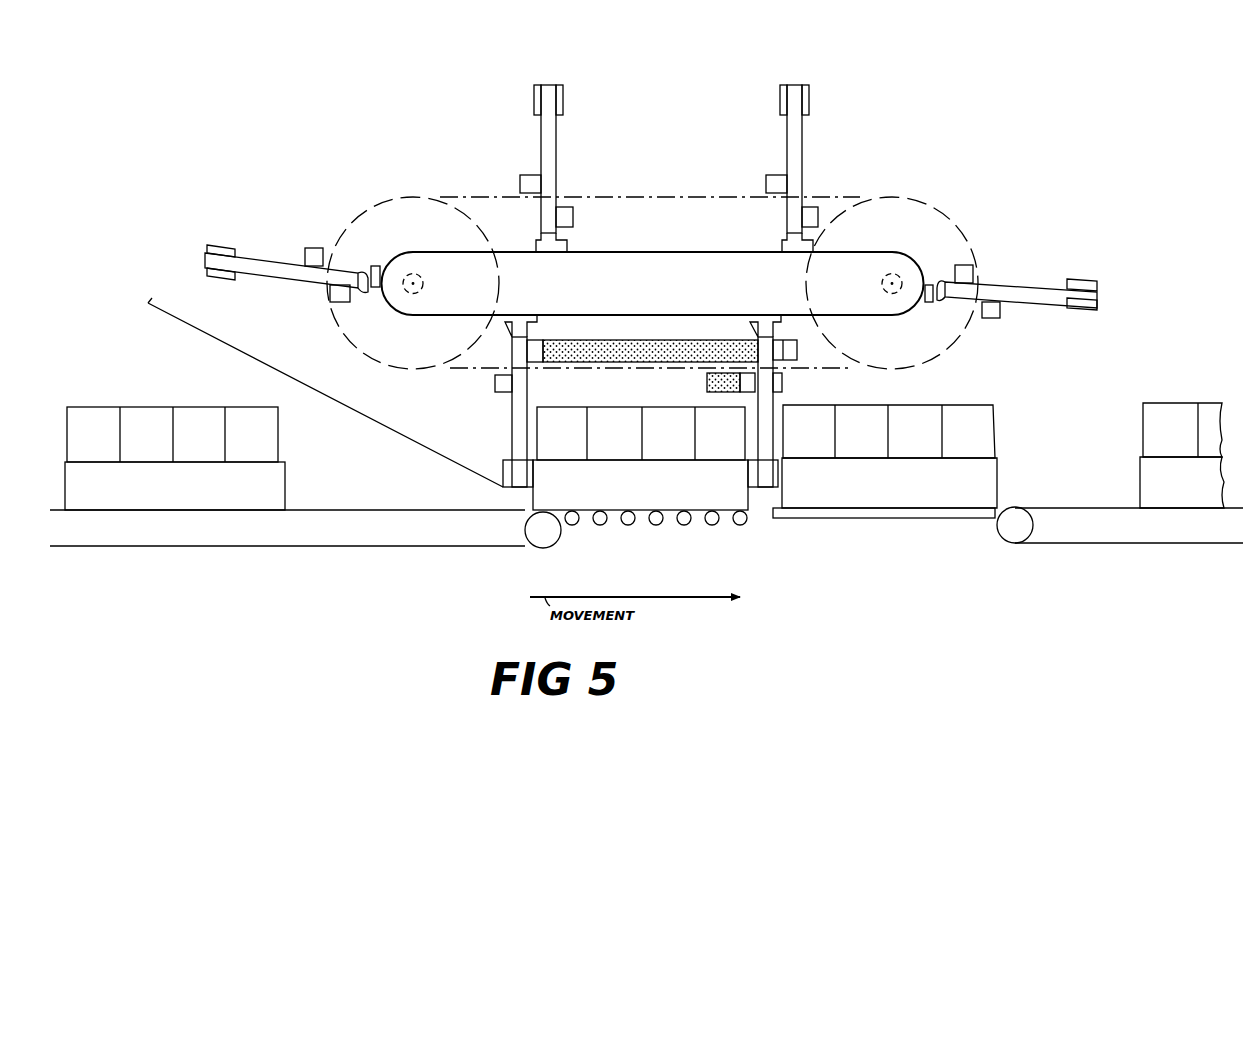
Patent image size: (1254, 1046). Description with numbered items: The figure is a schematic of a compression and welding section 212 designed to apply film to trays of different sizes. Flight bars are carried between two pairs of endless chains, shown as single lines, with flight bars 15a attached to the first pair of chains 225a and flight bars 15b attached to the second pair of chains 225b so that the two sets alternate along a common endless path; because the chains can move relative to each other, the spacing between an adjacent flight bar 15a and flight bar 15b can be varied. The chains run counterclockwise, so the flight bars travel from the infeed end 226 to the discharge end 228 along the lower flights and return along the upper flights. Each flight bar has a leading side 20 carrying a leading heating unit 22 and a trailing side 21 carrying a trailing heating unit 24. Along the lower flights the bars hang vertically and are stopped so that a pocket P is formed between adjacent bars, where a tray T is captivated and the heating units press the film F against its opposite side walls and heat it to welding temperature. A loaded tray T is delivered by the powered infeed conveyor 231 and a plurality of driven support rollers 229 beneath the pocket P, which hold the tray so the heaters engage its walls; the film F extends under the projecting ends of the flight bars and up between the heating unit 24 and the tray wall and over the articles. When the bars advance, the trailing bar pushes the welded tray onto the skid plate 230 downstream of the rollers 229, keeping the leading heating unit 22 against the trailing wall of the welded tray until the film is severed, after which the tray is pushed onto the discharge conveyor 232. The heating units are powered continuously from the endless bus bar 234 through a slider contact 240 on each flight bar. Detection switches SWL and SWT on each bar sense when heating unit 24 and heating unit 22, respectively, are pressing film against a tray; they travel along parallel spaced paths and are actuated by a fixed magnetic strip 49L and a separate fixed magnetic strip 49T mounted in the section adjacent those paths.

The compression and welding section 212 is at (913, 99).
The infeed end 226 is at (256, 372).
The discharge end 228 is at (1049, 381).
The first pair of endless chains 225a is at (820, 195).
The second pair of endless chains 225b is at (492, 194).
The flight bar 15a is at (804, 146).
The flight bar 15b is at (558, 146).
The leading side 20 is at (541, 129).
The trailing side 21 is at (557, 158).
The leading heating unit 22 is at (534, 98).
The trailing heating unit 24 is at (563, 99).
The detection switch SWT is at (532, 176).
The detection switch SWL is at (574, 218).
The slider contact 240 is at (553, 254).
The endless bus bar 234 is at (665, 255).
The magnetic strip 49T is at (640, 345).
The magnetic strip 49L is at (707, 383).
The pocket P is at (637, 384).
The film F is at (396, 438).
The tray T is at (280, 487).
The driven support rollers 229 is at (706, 526).
The skid plate 230 is at (834, 520).
The powered infeed conveyor 231 is at (411, 548).
The discharge conveyor 232 is at (1046, 546).